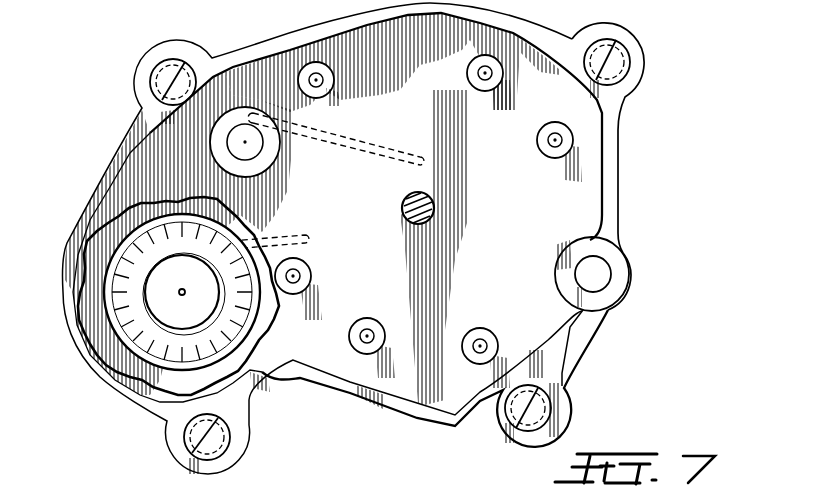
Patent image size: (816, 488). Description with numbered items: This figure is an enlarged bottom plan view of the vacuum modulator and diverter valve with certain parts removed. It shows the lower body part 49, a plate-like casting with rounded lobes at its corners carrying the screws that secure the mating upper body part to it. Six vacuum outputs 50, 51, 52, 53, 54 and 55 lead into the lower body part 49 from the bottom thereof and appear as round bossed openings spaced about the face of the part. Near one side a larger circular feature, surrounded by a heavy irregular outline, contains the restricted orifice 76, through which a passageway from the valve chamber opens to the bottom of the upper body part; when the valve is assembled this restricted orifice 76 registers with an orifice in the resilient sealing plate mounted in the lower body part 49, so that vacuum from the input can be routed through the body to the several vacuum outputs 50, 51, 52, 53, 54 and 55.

The lower body part 49 is at (93, 371).
The vacuum output 50 is at (366, 320).
The vacuum output 51 is at (475, 327).
The vacuum output 52 is at (546, 150).
The vacuum output 53 is at (481, 87).
The vacuum output 54 is at (302, 70).
The vacuum output 55 is at (305, 270).
The restricted orifice 76 is at (182, 295).